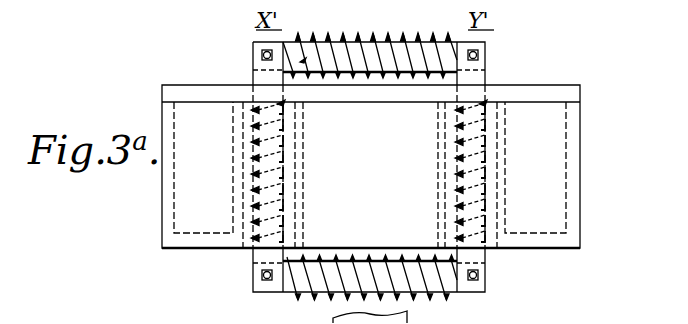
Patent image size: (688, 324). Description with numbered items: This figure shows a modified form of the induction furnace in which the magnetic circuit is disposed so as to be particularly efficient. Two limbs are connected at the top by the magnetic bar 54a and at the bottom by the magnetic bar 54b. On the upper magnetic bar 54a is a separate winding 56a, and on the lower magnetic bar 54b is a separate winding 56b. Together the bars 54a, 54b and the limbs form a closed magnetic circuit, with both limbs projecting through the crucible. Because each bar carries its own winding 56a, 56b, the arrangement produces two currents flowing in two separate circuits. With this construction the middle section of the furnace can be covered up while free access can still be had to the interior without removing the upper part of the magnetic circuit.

The winding 56a is at (342, 42).
The magnetic bar 54a is at (427, 45).
The winding 56b is at (308, 294).
The magnetic bar 54b is at (449, 284).